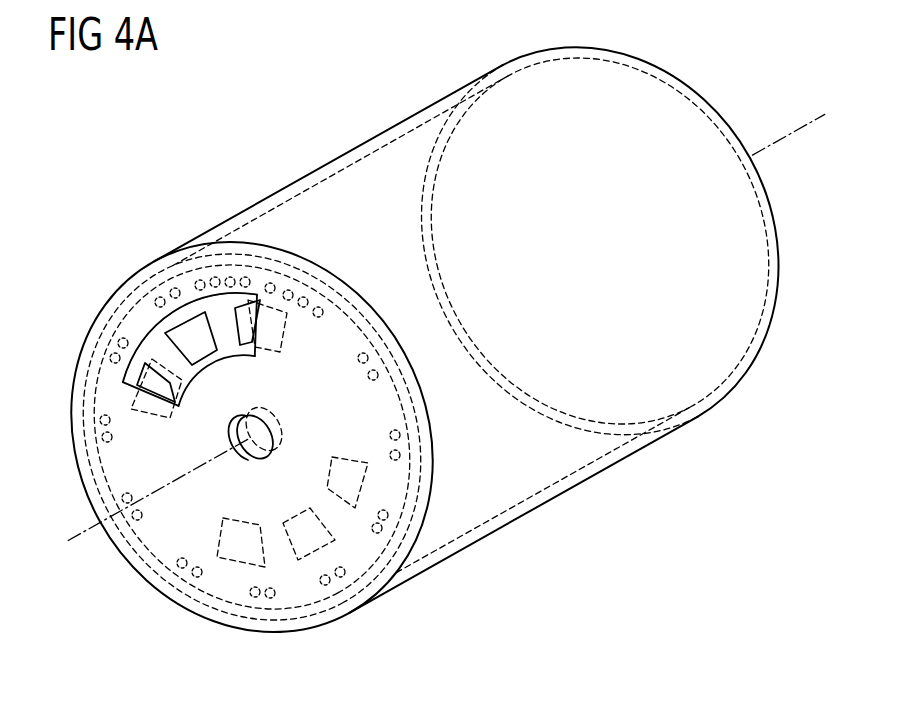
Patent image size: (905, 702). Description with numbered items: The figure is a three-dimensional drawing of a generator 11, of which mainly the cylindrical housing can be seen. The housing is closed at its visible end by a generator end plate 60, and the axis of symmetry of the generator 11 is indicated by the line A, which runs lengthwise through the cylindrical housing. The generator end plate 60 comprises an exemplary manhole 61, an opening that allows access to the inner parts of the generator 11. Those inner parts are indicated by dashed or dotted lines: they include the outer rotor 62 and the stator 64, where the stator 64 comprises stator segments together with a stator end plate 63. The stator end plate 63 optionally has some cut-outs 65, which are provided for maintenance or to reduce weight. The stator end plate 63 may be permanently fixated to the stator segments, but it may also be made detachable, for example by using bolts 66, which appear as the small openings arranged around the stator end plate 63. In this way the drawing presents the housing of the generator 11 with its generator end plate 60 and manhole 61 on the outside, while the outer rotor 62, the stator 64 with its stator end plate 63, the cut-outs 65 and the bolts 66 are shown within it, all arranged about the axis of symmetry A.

The generator 11 is at (232, 152).
The generator end plate 60 is at (727, 68).
The manhole 61 is at (157, 327).
The outer rotor 62 is at (770, 263).
The stator end plate 63 is at (213, 310).
The stator 64 is at (284, 608).
The cut-outs 65 is at (202, 348).
The bolts 66 is at (112, 438).
The axis of symmetry A is at (808, 128).